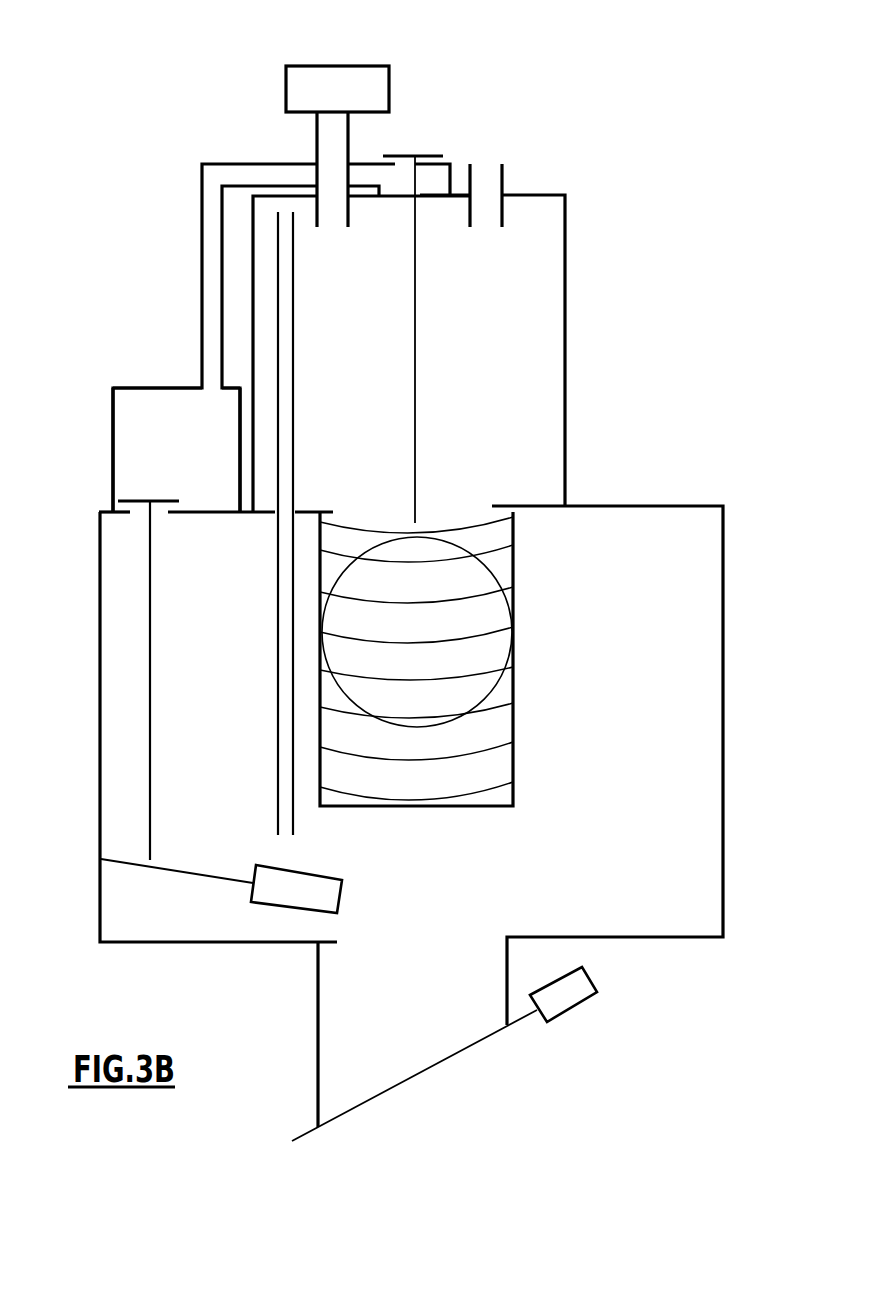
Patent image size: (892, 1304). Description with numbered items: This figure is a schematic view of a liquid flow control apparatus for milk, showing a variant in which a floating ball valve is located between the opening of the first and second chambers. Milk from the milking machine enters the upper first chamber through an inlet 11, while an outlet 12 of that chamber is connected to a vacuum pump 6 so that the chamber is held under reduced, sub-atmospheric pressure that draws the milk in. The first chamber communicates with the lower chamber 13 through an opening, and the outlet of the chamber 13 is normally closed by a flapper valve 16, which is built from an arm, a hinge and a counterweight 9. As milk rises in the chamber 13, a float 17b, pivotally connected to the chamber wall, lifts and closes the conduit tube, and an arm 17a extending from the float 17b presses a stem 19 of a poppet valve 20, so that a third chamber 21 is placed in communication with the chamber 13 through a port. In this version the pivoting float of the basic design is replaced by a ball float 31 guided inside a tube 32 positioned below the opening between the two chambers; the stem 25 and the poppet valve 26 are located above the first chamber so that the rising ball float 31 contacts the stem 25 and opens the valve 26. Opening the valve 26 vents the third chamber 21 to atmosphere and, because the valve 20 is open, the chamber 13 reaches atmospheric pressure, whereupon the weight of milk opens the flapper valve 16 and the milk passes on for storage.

The vacuum pump 6 is at (380, 88).
The outlet 12 is at (317, 141).
The poppet valve 26 is at (421, 157).
The stem 25 is at (415, 302).
The inlet 11 is at (503, 174).
The third chamber 21 is at (113, 417).
The poppet valve 20 is at (132, 498).
The stem 19 is at (152, 770).
The tube 32 is at (510, 568).
The ball float 31 is at (468, 622).
The chamber 13 is at (700, 726).
The arm 17a is at (193, 873).
The float 17b is at (280, 893).
The counterweight 9 is at (570, 993).
The flapper valve 16 is at (468, 1108).